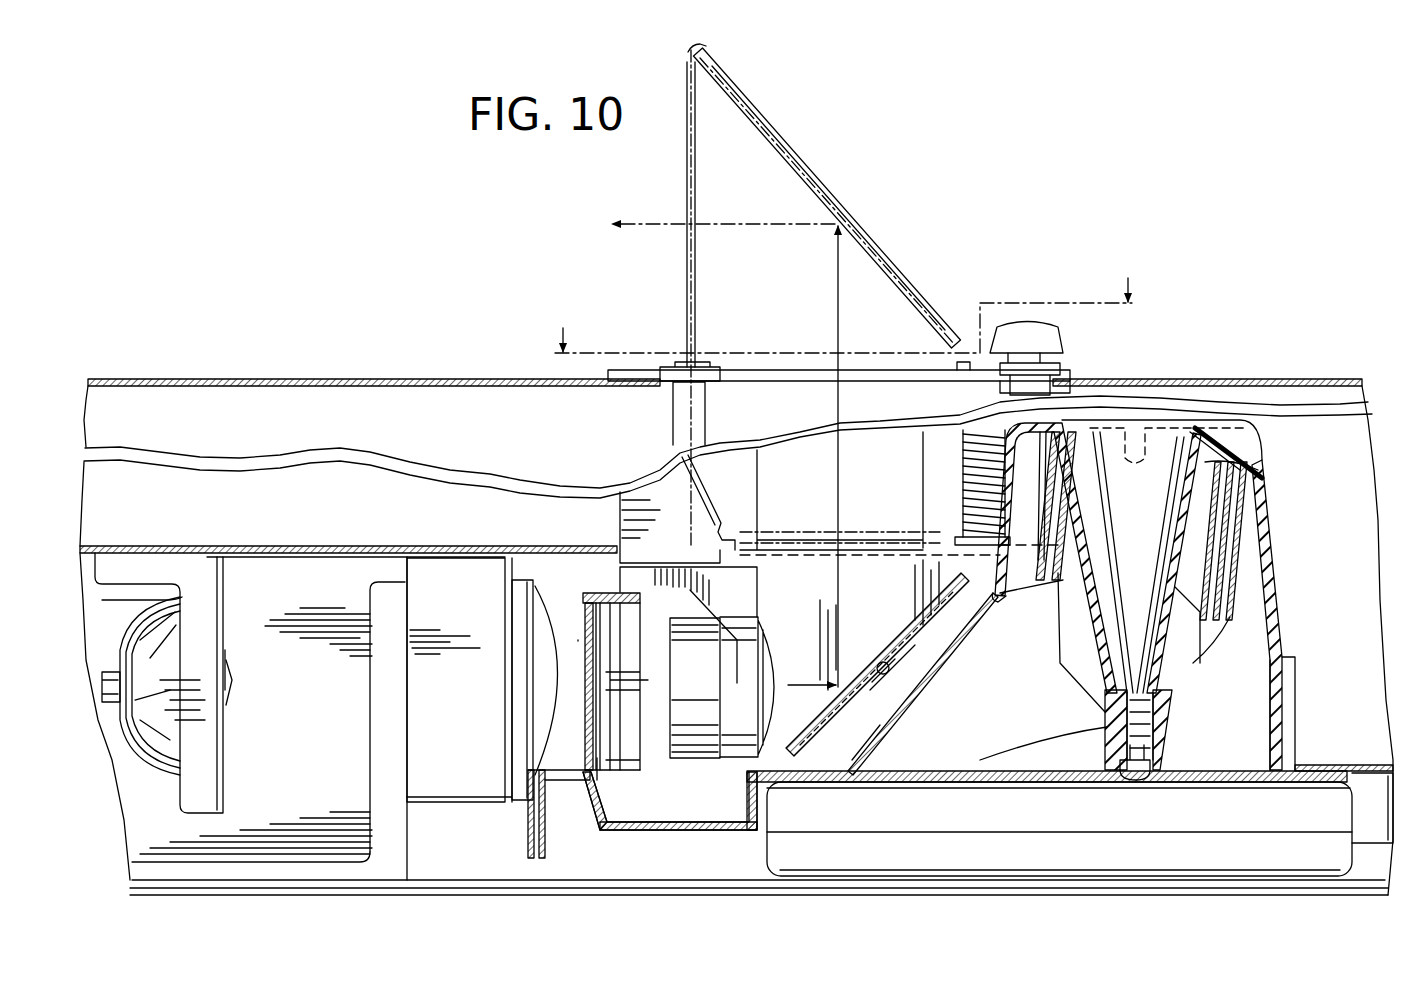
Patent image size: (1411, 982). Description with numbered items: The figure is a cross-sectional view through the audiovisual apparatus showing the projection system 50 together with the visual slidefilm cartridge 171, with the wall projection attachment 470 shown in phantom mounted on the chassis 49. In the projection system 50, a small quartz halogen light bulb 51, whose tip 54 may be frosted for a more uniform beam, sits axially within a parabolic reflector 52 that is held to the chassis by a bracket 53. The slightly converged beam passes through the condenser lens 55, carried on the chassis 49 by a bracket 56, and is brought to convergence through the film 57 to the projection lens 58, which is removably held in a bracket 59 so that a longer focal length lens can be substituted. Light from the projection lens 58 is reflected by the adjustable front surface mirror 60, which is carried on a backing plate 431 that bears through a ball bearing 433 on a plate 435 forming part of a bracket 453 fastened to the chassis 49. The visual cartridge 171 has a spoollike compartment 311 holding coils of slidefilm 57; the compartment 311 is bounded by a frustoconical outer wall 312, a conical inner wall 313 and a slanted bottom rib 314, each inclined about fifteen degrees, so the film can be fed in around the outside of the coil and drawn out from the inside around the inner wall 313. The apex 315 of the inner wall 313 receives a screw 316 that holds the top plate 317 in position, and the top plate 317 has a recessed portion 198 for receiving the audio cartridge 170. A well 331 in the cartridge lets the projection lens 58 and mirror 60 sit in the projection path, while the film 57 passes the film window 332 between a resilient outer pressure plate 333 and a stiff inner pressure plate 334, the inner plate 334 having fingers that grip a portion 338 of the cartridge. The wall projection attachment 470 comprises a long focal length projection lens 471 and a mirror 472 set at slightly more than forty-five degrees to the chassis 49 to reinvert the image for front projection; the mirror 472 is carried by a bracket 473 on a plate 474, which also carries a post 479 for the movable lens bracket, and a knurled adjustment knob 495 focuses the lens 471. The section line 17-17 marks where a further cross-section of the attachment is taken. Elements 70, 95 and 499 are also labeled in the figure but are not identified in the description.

The section line 17- 17 is at (842, 299).
The chassis 49 is at (414, 379).
The projection system 50 is at (414, 824).
The quartz halogen light bulb 51 is at (230, 668).
The parabolic reflector 52 is at (172, 748).
The bracket 53 is at (208, 786).
The tip of bulb 54 is at (236, 683).
The condenser lens 55 is at (545, 625).
The bracket 56 is at (459, 680).
The slidefilm 57 is at (592, 770).
The projection lens 58 is at (695, 750).
The bracket 59 is at (688, 625).
The adjustable front surface mirror 60 is at (892, 660).
The end support 70 is at (1350, 770).
The base plate 95 is at (727, 838).
The audio cartridge 170 is at (1059, 829).
The visual cartridge 171 is at (640, 838).
The recessed portion 198 is at (888, 785).
The spoollike compartment 311 is at (1256, 538).
The outer wall 312 is at (1260, 480).
The conical inner wall 313 is at (1172, 522).
The slanted bottom rib 314 is at (1262, 470).
The apex 315 is at (1155, 706).
The screw 316 is at (1126, 752).
The top plate 317 is at (1240, 770).
The well 331 is at (920, 702).
The film window 332 is at (576, 640).
The outer pressure plate 333 is at (630, 610).
The inner pressure plate 334 is at (588, 612).
The portion of visual cartridge 338 is at (634, 768).
The backing plate 431 is at (1002, 603).
The ball bearing 433 is at (905, 680).
The plate 435 is at (872, 735).
The bracket 453 is at (860, 625).
The wall projection attachment 470 is at (820, 158).
The long focal length projection lens 471 is at (775, 474).
The mirror 472 is at (770, 152).
The bracket 473 is at (687, 258).
The plate 474 is at (648, 367).
The post 479 is at (673, 422).
The knurled adjustment knob 495 is at (1060, 336).
The mounting plate 499 is at (652, 386).